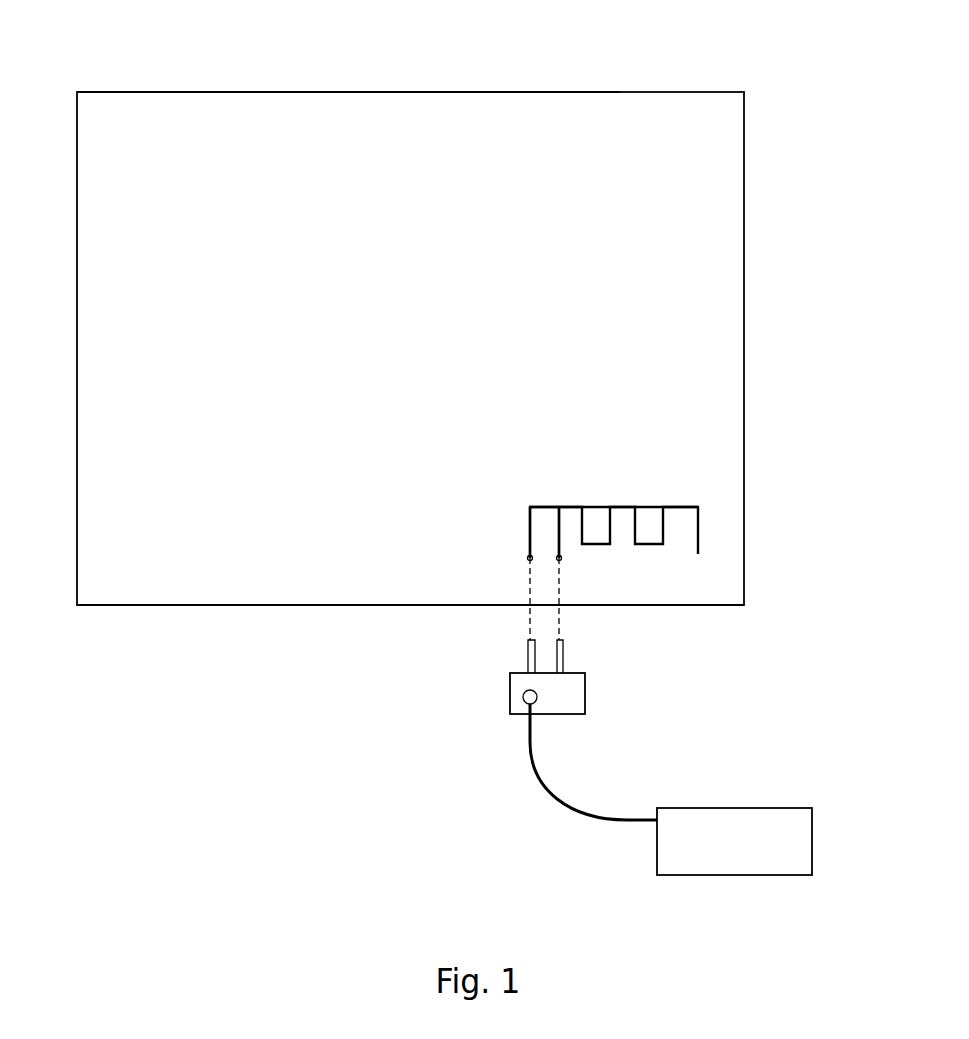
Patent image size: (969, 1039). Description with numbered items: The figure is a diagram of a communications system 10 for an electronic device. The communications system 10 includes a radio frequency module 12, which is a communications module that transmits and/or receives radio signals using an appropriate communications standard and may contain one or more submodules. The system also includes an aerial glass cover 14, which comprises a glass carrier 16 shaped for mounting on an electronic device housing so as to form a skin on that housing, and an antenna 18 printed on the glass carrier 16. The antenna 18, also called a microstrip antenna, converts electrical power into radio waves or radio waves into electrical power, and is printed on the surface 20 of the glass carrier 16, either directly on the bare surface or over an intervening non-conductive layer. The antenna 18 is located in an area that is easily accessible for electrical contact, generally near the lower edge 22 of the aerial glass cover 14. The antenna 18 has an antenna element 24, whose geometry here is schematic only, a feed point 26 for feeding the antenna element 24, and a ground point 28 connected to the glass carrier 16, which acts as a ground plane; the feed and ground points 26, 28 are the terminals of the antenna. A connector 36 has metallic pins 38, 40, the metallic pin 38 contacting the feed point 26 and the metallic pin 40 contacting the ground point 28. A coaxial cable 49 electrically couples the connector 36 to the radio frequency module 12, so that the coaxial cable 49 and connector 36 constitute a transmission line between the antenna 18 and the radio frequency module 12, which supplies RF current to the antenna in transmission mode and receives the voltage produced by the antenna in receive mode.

The communications system 10 is at (322, 68).
The radio frequency (RF) module 12 is at (738, 857).
The aerial glass cover 14 is at (460, 82).
The glass carrier 16 is at (255, 103).
The antenna 18 is at (541, 495).
The surface 20 is at (727, 276).
The lower edge 22 is at (353, 605).
The antenna element 24 is at (572, 508).
The feed point 26 is at (528, 560).
The ground point 28 is at (561, 559).
The connector 36 is at (570, 698).
The metallic pin 38 is at (530, 658).
The metallic pin 40 is at (561, 658).
The coaxial cable 49 is at (617, 822).